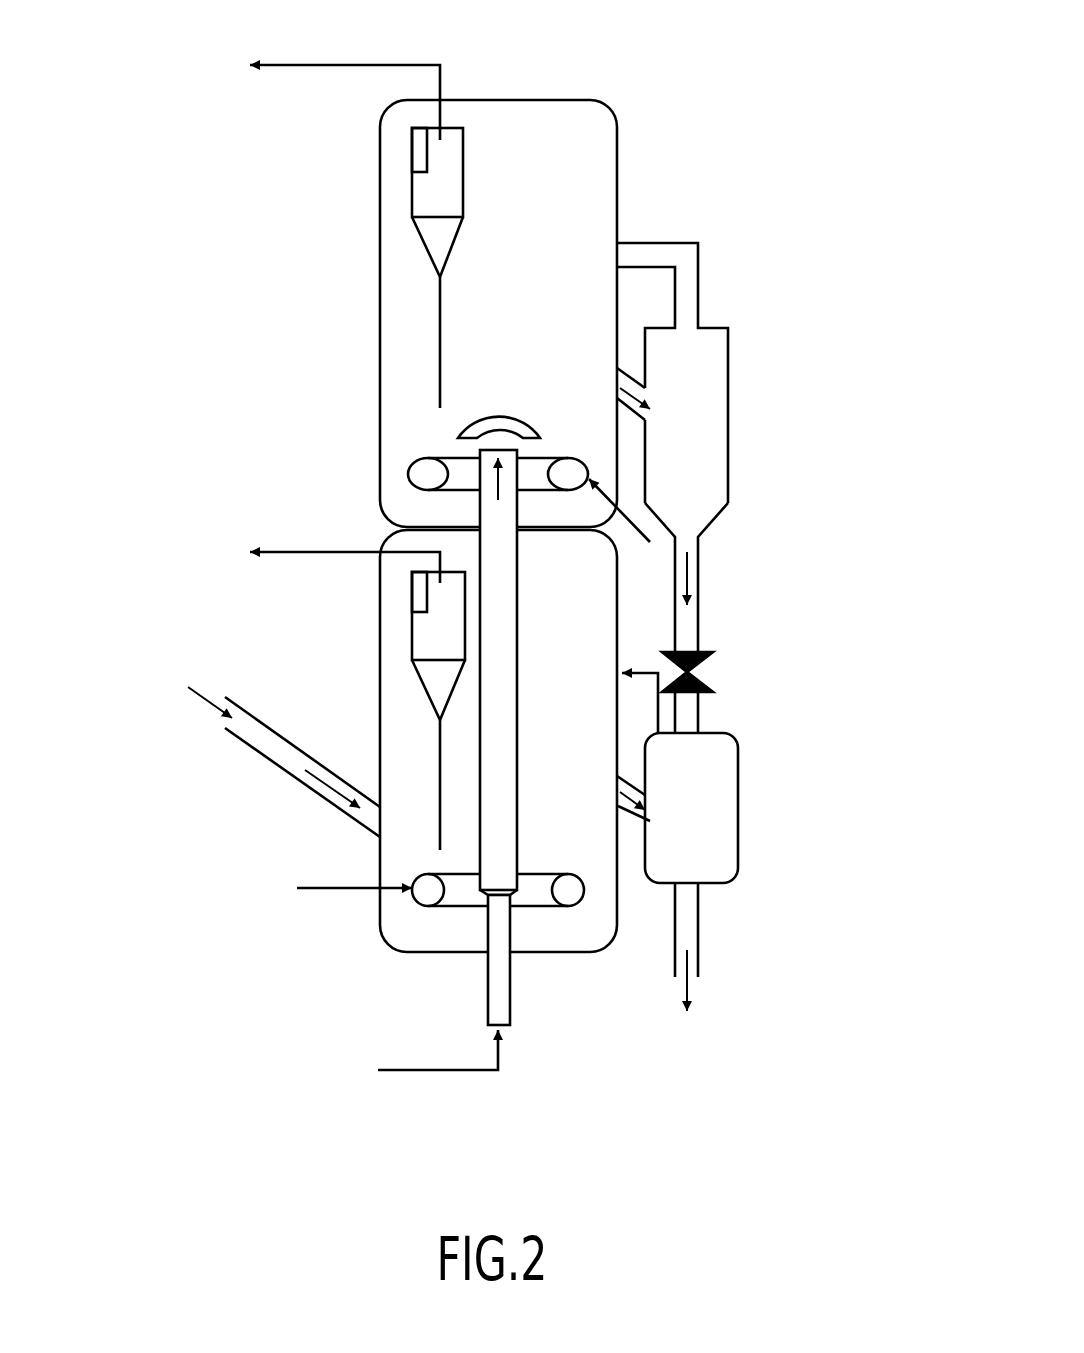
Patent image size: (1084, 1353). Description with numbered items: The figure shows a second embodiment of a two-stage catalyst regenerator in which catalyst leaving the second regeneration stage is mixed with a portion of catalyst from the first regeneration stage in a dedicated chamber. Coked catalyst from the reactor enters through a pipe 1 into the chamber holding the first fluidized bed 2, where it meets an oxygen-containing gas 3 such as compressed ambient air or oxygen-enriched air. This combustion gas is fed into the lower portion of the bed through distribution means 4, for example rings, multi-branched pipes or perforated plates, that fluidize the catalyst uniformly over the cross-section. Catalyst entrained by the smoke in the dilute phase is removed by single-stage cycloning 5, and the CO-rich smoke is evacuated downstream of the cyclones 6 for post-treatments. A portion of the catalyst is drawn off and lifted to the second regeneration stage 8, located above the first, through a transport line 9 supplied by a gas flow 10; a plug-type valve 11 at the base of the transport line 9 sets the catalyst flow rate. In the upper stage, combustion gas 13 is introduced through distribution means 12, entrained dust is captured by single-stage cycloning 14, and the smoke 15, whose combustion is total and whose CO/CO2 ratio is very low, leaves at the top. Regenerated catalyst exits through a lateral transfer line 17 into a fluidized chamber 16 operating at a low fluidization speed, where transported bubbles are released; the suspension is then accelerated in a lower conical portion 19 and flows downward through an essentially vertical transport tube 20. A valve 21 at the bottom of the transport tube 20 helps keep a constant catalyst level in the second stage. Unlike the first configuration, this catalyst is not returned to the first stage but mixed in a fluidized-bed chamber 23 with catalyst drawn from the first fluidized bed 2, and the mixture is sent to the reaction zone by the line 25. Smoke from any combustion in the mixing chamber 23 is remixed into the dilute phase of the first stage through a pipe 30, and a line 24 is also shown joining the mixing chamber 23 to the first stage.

The pipe 1 is at (285, 762).
The first fluidized bed 2 is at (405, 692).
The gas 3 is at (325, 890).
The means 4 is at (430, 897).
The single-stage cycloning 5 is at (443, 635).
The cyclones 6 is at (300, 550).
The second regeneration stage 8 is at (393, 255).
The transport line 9 is at (500, 660).
The gas flow 10 is at (438, 1073).
The plug-type valve 11 is at (497, 897).
The means 12 is at (430, 477).
The combustion gas 13 is at (650, 542).
The single-stage cycloning 14 is at (445, 178).
The smoke 15 is at (303, 63).
The fluidized chamber 16 is at (708, 408).
The lateral transfer line 17 is at (630, 380).
The lower conical portion 19 is at (702, 513).
The transport tube 20 is at (686, 612).
The valve 21 is at (692, 672).
The chamber 23 is at (730, 818).
The return line 24 is at (620, 803).
The line 25 is at (693, 918).
The pipe 30 is at (658, 673).